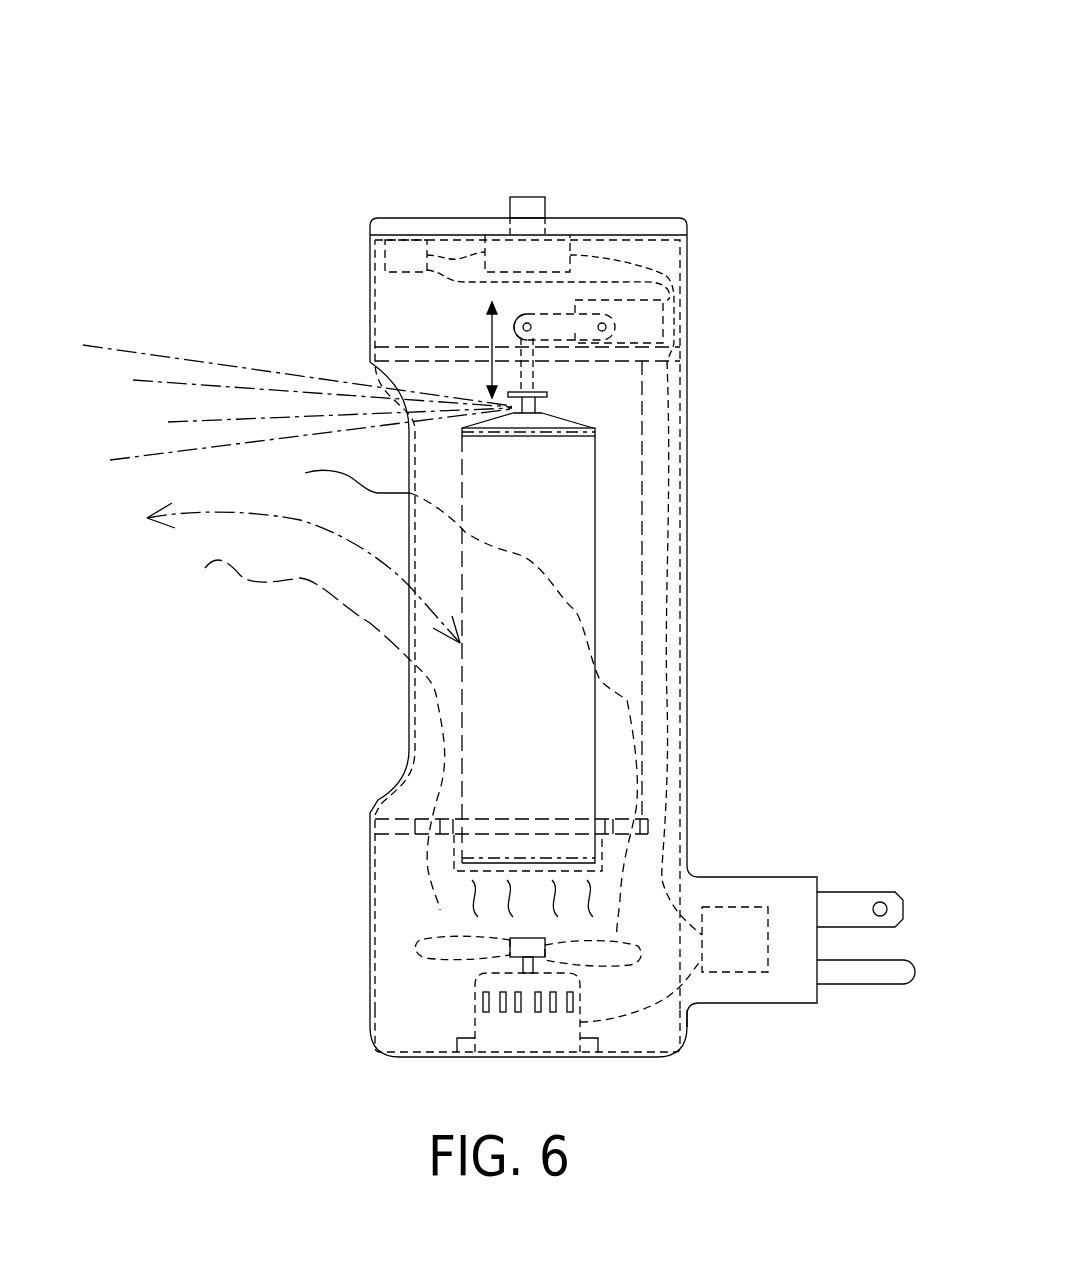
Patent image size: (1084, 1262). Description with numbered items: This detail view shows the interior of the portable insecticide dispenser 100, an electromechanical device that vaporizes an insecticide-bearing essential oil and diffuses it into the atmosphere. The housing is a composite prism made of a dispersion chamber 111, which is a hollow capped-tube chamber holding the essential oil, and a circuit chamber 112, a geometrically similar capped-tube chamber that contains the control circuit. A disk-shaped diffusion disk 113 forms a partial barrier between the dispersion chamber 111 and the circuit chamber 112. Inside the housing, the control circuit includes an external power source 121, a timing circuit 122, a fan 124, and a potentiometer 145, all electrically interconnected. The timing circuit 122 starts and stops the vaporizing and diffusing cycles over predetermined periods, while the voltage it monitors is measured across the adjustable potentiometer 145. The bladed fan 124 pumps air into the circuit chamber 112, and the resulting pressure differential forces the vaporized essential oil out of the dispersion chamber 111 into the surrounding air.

The portable insecticide dispenser 100 is at (303, 112).
The dispersion chamber 111 is at (687, 586).
The circuit chamber 112 is at (655, 1027).
The diffusion disk 113 is at (393, 833).
The external power source 121 is at (753, 887).
The timing circuit 122 is at (427, 255).
The fan 124 is at (551, 1037).
The potentiometer 145 is at (557, 252).